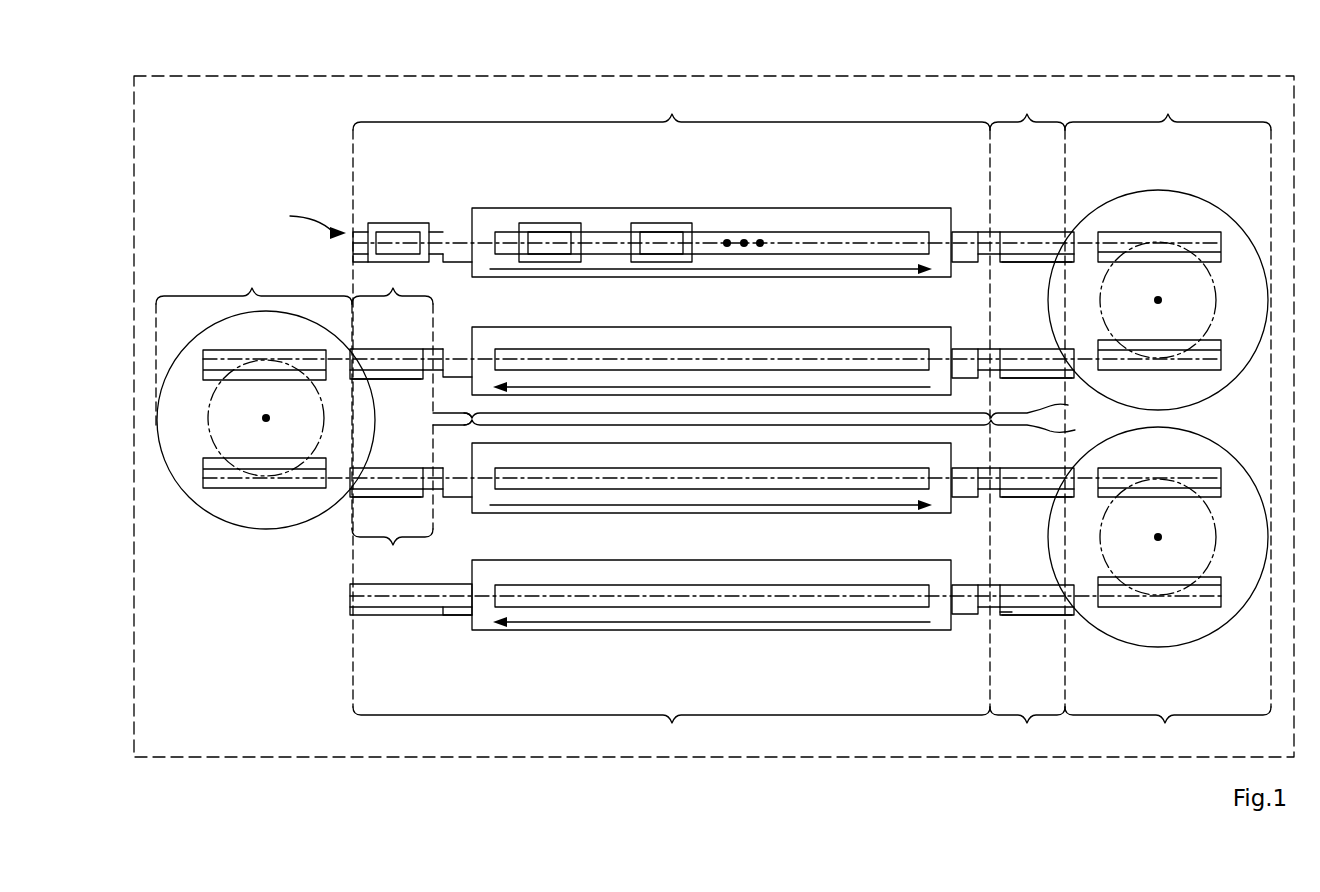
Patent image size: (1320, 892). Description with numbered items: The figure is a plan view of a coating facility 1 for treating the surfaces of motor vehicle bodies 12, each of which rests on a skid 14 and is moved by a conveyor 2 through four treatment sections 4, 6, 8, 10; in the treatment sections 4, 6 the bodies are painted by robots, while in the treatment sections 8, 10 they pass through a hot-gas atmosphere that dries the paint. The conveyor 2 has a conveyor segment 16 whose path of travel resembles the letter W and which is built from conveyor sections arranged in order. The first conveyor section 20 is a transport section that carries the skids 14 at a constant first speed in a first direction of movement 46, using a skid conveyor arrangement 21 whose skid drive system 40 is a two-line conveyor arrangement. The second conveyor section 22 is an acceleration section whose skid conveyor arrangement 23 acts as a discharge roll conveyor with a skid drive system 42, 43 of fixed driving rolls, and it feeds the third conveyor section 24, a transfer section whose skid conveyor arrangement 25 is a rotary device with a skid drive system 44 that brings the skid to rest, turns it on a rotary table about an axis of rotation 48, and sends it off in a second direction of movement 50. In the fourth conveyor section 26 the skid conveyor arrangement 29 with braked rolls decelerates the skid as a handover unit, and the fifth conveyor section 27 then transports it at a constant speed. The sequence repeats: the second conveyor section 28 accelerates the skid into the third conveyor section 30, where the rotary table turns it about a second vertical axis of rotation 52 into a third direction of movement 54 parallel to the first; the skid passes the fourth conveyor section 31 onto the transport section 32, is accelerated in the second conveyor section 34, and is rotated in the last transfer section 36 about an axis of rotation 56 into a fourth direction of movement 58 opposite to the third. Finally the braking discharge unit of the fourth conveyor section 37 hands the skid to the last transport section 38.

The coating facility 1 is at (190, 78).
The conveyor 2 is at (308, 220).
The treatment section 4 is at (710, 208).
The treatment section 6 is at (710, 327).
The treatment section 8 is at (710, 443).
The treatment section 10 is at (709, 560).
The motor vehicle body 12 is at (413, 232).
The skid 14 is at (376, 223).
The conveyor segment 16 is at (1012, 615).
The first conveyor section 20 is at (671, 397).
The skid conveyor arrangement 21 is at (966, 232).
The second conveyor section 22 is at (1027, 397).
The skid conveyor arrangement 23 is at (403, 349).
The third conveyor section 24 is at (1168, 397).
The skid conveyor arrangement 25 is at (1118, 198).
The fourth conveyor section 26 is at (766, 407).
The fifth conveyor section 27 is at (471, 413).
The second conveyor section 28 is at (392, 397).
The skid conveyor arrangement 29 is at (391, 468).
The third conveyor section 30 is at (254, 347).
The fourth conveyor section 31 is at (385, 545).
The conveyor section 32 is at (471, 425).
The second conveyor section 34 is at (769, 429).
The third conveyor section 36 is at (1168, 730).
The fourth conveyor section 37 is at (1027, 730).
The conveyor section 38 is at (671, 730).
The skid drive system 40 is at (455, 262).
The skid drive system 42 is at (391, 380).
The skid drive system 43 is at (391, 497).
The skid drive system 44 is at (245, 458).
The first direction of movement 46 is at (757, 277).
The axis of rotation 48 is at (1158, 300).
The second direction of movement 50 is at (757, 395).
The second vertical axis of rotation 52 is at (266, 418).
The third direction of movement 54 is at (757, 513).
The axis of rotation 56 is at (1158, 537).
The fourth direction of movement 58 is at (757, 630).